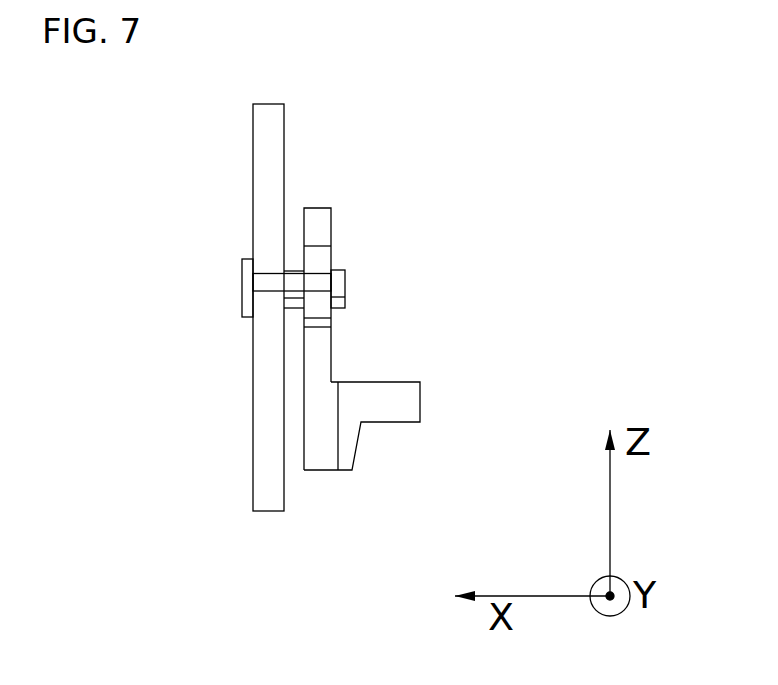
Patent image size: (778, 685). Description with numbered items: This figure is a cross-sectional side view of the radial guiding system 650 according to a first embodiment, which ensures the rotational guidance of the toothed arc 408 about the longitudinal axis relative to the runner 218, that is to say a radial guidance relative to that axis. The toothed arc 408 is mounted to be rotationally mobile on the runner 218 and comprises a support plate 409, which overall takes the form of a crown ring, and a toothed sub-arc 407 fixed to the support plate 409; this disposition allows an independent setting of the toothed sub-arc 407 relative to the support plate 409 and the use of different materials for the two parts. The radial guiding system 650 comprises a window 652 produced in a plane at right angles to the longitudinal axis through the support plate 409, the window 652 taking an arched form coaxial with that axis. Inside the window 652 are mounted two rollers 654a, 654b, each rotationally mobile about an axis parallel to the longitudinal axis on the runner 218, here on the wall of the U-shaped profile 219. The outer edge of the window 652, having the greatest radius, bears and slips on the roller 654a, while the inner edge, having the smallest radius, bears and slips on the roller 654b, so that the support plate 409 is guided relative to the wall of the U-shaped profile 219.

The runner 218 is at (212, 227).
The U-shaped profile 219 is at (253, 127).
The toothed sub-arc 407 is at (388, 407).
The toothed arc 408 is at (482, 358).
The support plate 409 is at (315, 222).
The radial guiding system 650 is at (513, 172).
The window 652 is at (303, 327).
The roller 654a is at (323, 265).
The roller 654b is at (313, 323).